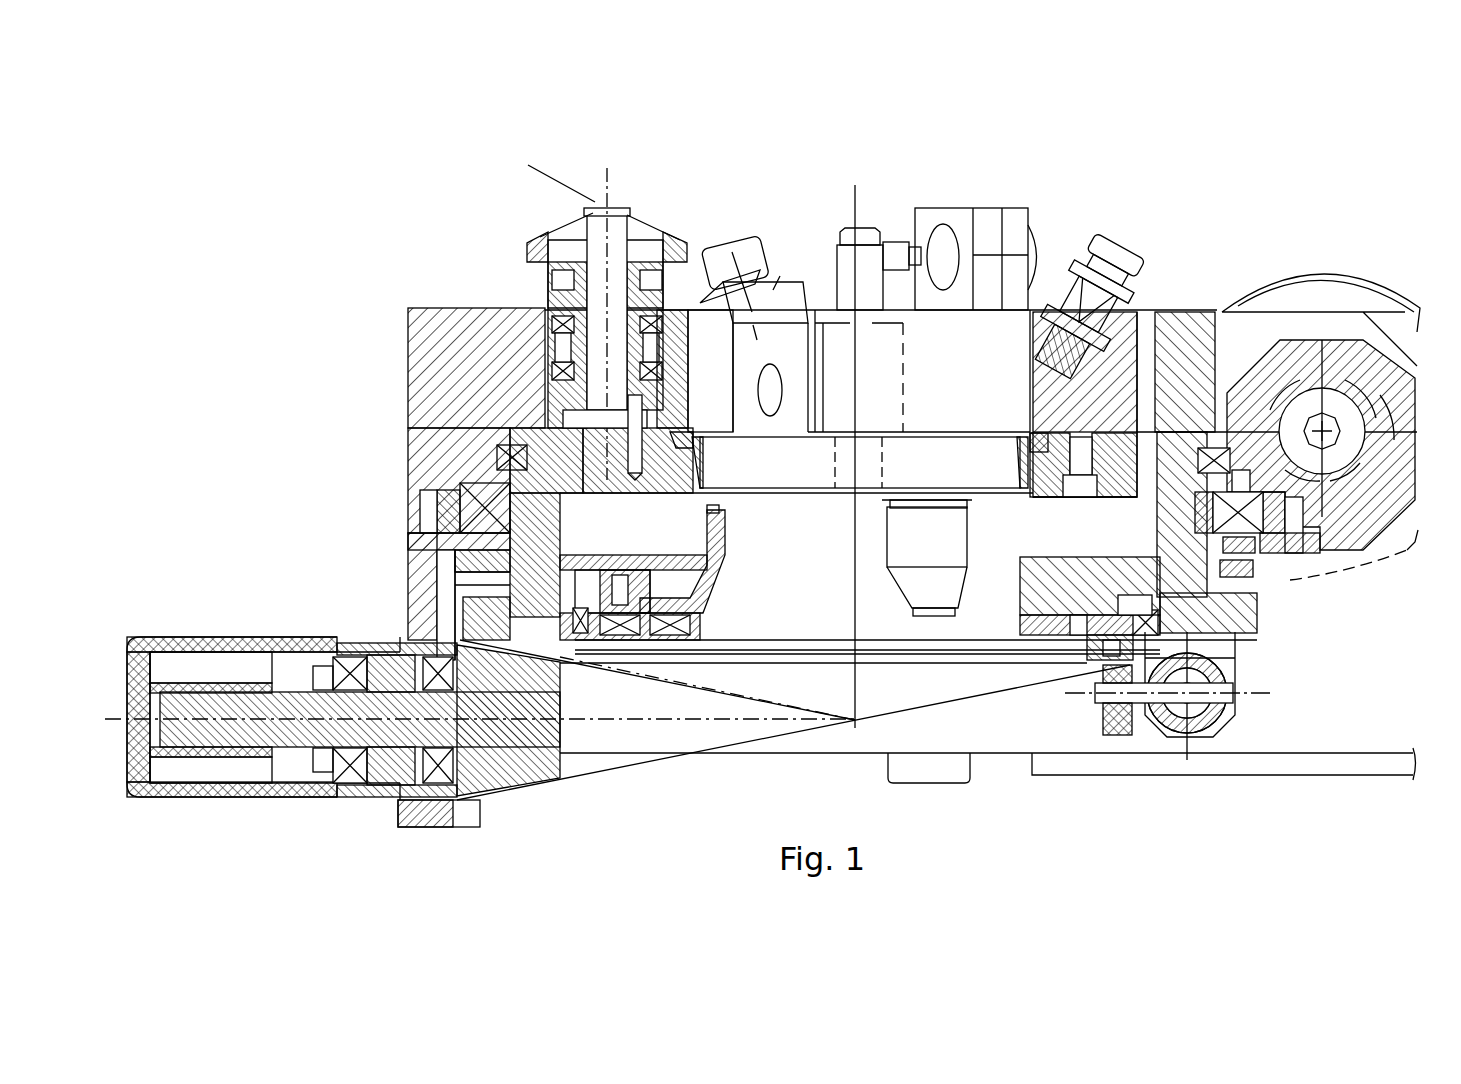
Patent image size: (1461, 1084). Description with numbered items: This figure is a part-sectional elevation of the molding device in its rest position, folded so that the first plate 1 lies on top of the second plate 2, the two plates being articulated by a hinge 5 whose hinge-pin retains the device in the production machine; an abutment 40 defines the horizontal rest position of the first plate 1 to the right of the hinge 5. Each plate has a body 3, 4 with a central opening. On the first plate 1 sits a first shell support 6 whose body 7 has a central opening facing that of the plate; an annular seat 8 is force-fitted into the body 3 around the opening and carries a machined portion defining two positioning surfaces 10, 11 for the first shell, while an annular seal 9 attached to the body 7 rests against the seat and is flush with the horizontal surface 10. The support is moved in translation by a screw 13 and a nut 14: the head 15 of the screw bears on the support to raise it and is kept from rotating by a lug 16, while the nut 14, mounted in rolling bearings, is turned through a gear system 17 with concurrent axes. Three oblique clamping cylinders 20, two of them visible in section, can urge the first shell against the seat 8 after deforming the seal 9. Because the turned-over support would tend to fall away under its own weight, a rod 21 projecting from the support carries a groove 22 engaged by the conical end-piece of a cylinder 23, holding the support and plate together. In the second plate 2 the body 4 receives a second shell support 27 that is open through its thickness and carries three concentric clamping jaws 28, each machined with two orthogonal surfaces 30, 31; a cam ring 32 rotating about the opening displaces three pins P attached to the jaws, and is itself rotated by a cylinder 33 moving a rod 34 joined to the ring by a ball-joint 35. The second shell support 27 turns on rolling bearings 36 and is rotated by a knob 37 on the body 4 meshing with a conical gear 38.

The first plate 1 is at (438, 305).
The second plate 2 is at (405, 489).
The body 3 is at (430, 342).
The body 4 is at (430, 455).
The hinge 5 is at (1390, 378).
The first shell support 6 is at (1050, 500).
The body 7 is at (1145, 330).
The annular seat 8 is at (688, 402).
The annular seal 9 is at (705, 462).
The positioning surface 10 is at (693, 432).
The positioning surface 11 is at (1025, 440).
The screw 13 is at (613, 212).
The nut 14 is at (635, 245).
The head 15 is at (580, 428).
The lug 16 is at (640, 465).
The gear system 17 is at (546, 258).
The clamping cylinder 20 is at (745, 248).
The rod 21 is at (872, 228).
The groove 22 is at (838, 258).
The cylinder 23 is at (935, 250).
The second shell support 27 is at (1020, 575).
The clamping jaw 28 is at (725, 540).
The positioning surface 30 is at (725, 512).
The positioning surface 31 is at (888, 505).
The cam ring 32 is at (695, 628).
The cylinder 33 is at (1220, 712).
The rod 34 is at (1228, 688).
The ball-joint 35 is at (1105, 715).
The rolling bearing 36 is at (500, 455).
The knob 37 is at (220, 637).
The conical gear 38 is at (468, 620).
The abutment 40 is at (410, 580).
The pin P is at (612, 581).